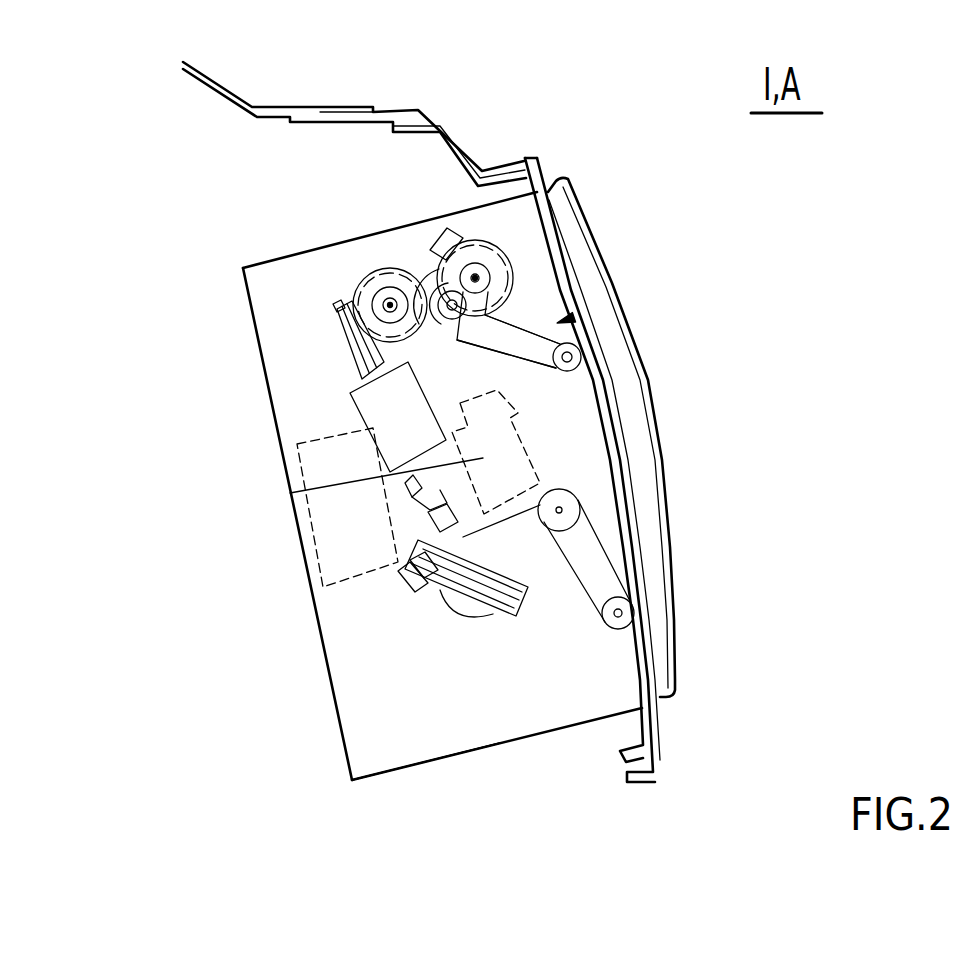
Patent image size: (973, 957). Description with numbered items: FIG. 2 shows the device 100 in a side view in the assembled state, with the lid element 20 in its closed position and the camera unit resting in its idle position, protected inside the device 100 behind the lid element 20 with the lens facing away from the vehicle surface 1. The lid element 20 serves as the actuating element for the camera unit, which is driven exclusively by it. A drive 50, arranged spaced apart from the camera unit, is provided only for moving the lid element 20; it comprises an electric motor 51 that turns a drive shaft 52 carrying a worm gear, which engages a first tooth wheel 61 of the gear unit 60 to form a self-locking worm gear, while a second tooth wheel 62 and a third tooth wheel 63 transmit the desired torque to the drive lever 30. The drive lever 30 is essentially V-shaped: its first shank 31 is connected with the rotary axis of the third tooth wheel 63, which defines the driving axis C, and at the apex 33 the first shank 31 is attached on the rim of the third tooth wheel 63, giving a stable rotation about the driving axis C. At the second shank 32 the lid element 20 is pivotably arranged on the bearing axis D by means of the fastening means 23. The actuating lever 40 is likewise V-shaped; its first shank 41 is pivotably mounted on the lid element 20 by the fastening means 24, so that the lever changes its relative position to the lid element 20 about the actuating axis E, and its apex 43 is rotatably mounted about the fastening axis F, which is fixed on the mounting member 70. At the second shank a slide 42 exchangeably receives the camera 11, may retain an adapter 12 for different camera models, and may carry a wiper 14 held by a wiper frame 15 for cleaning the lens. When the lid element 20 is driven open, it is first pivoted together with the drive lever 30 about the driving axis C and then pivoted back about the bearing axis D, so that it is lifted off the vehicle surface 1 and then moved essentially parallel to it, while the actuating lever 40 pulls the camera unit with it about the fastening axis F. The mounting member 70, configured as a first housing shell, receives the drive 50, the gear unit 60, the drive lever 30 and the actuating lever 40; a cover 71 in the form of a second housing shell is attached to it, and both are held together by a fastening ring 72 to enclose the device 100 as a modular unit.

The vehicle surface 1 is at (442, 88).
The device 100 is at (189, 231).
The lid element 20 is at (568, 190).
The fastening means 23 is at (580, 357).
The fastening means 24 is at (612, 620).
The drive lever 30 is at (578, 330).
The first shank 31 is at (505, 333).
The second shank 32 is at (520, 340).
The apex 33 is at (451, 311).
The actuating lever 40 is at (556, 598).
The first shank 41 is at (615, 571).
The slide 42 is at (585, 546).
The apex 43 is at (579, 500).
The drive 50 is at (266, 381).
The electric motor 51 is at (350, 412).
The drive shaft 52 is at (340, 338).
The gear unit 60 is at (358, 209).
The first tooth wheel 61 is at (362, 275).
The second tooth wheel 62 is at (430, 280).
The third tooth wheel 63 is at (471, 208).
The mounting member 70 is at (362, 725).
The cover 71 is at (426, 761).
The fastening ring 72 is at (303, 568).
The camera 11 is at (450, 607).
The adapter 12 is at (407, 471).
The wiper 14 is at (405, 584).
The wiper frame 15 is at (322, 646).
The driving axis C is at (475, 283).
The bearing axis D is at (574, 317).
The actuating axis E is at (619, 622).
The fastening axis F is at (558, 505).